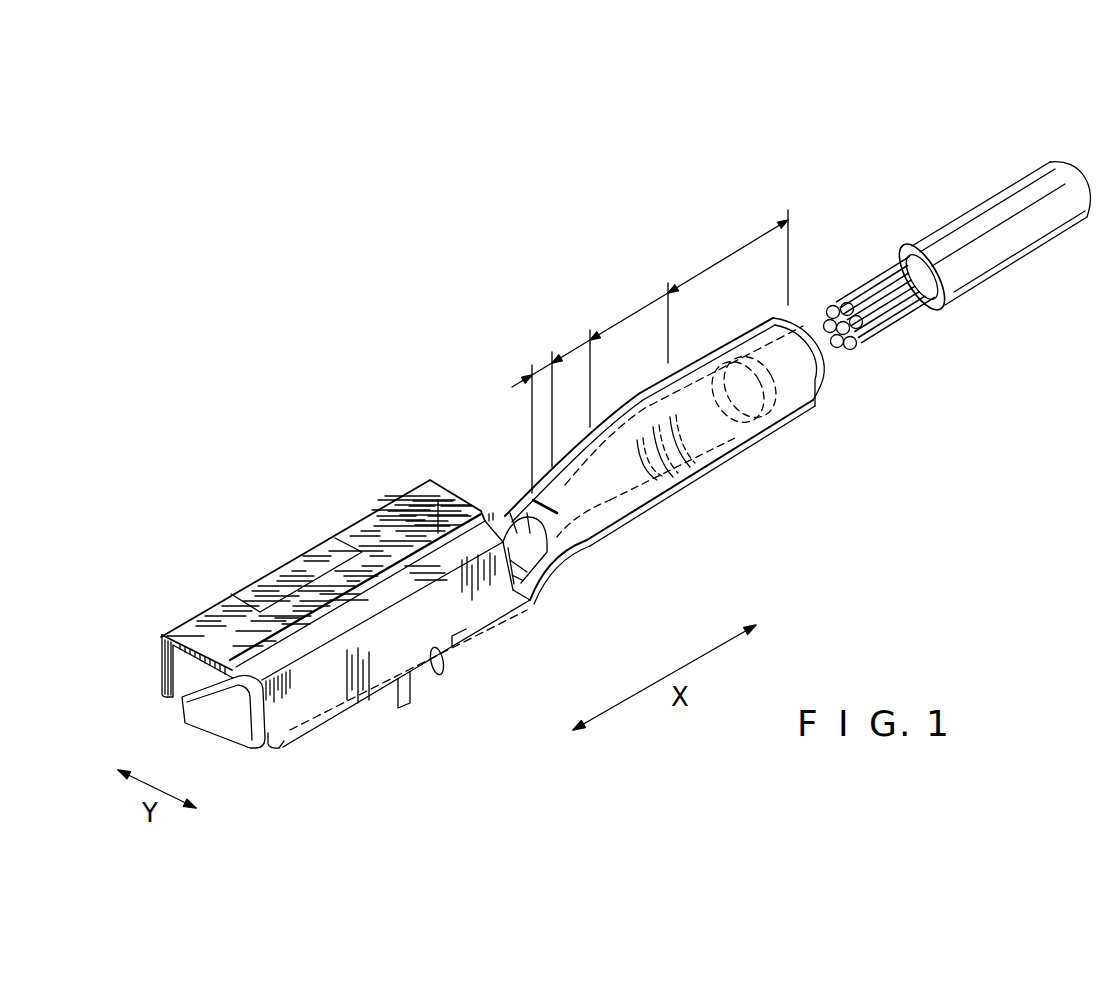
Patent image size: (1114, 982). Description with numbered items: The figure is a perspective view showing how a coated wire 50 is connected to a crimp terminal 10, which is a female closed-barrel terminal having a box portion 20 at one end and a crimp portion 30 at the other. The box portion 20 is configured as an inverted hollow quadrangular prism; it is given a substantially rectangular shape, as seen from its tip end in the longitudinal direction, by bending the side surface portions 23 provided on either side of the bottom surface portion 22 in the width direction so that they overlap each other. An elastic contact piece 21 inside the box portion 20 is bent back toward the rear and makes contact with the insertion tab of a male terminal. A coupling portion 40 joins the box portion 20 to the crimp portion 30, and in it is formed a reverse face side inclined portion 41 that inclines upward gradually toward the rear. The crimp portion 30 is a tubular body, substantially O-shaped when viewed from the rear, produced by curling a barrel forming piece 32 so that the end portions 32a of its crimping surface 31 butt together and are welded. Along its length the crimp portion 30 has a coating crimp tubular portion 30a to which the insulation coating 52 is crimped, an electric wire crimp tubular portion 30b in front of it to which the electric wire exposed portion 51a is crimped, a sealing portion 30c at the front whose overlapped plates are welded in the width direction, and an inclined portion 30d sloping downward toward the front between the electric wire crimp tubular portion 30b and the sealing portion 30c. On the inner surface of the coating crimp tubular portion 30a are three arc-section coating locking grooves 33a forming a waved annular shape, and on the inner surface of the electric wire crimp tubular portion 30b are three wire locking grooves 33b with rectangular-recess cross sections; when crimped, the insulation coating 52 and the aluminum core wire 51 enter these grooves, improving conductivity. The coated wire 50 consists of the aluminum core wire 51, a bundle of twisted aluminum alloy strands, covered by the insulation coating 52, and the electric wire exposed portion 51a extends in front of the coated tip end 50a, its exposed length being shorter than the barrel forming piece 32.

The crimp terminal 10 is at (495, 270).
The box portion 20 is at (393, 492).
The elastic contact piece 21 is at (220, 720).
The bottom surface portion 22 is at (370, 697).
The side surface portions 23 is at (487, 602).
The crimp portion 30 is at (723, 465).
The coating crimp tubular portion 30a is at (728, 250).
The electric wire crimp tubular portion 30b is at (635, 307).
The sealing portion 30c is at (538, 360).
The inclined portion 30d is at (567, 347).
The crimping surface 31 is at (600, 507).
The barrel forming piece 32 is at (790, 387).
The end portions 32a is at (776, 316).
The coating locking grooves 33a is at (790, 423).
The wire locking grooves 33b is at (668, 465).
The coupling portion 40 is at (537, 610).
The reverse face side inclined portion 41 is at (523, 547).
The coated wire 50 is at (1022, 272).
The coated tip end 50a is at (943, 287).
The aluminum core wire 51 is at (915, 330).
The electric wire exposed portion 51a is at (887, 333).
The insulation coating 52 is at (1003, 210).